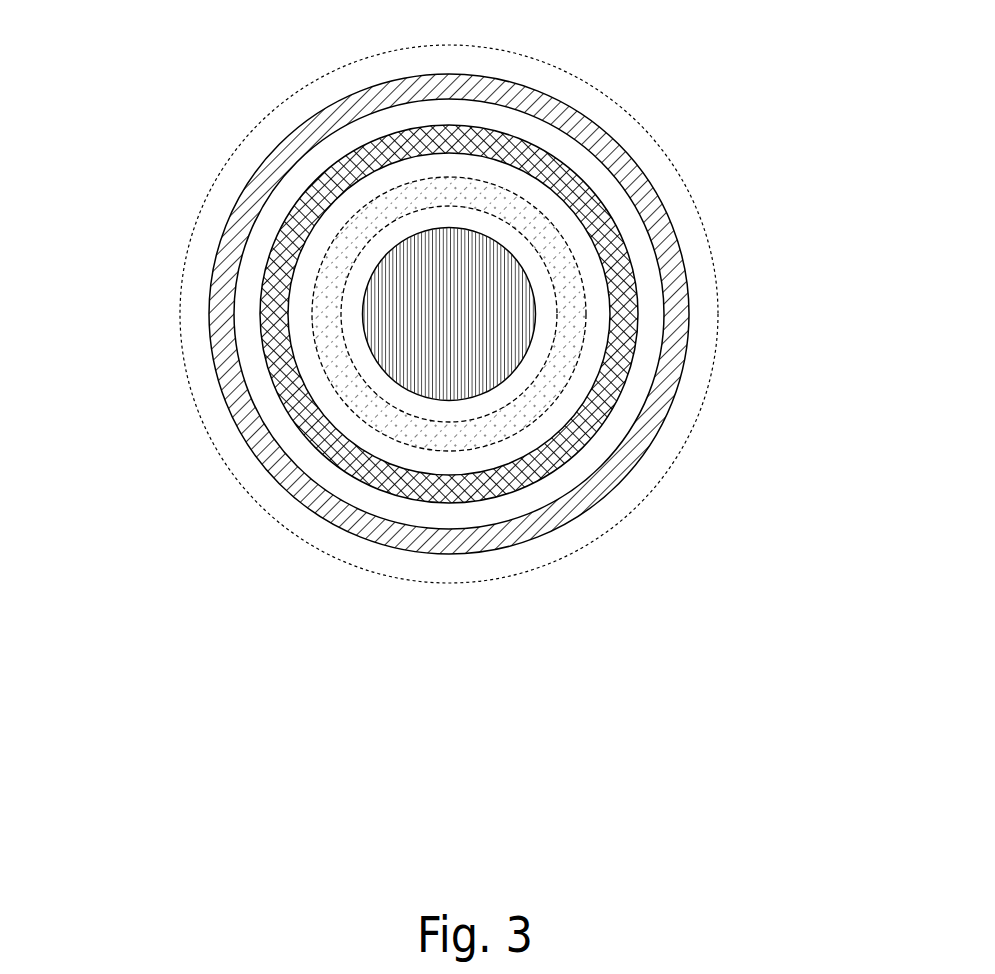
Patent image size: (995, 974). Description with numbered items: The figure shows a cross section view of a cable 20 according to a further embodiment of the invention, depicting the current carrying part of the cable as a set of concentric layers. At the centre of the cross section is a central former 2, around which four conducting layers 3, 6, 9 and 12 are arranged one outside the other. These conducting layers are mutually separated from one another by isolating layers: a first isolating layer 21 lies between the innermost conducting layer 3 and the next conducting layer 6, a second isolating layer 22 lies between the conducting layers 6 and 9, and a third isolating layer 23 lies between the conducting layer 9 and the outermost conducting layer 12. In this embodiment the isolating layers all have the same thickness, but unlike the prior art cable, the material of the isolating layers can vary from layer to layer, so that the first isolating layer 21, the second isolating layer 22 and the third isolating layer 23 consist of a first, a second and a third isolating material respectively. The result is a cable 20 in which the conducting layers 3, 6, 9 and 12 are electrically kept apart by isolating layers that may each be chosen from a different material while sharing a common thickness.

The cable 20 is at (698, 45).
The central former 2 is at (478, 328).
The conducting layer 3 is at (550, 313).
The first isolating layer 21 is at (583, 282).
The conducting layer 6 is at (588, 241).
The second isolating layer 22 is at (280, 230).
The conducting layer 9 is at (247, 300).
The third isolating layer 23 is at (230, 422).
The conducting layer 12 is at (288, 518).